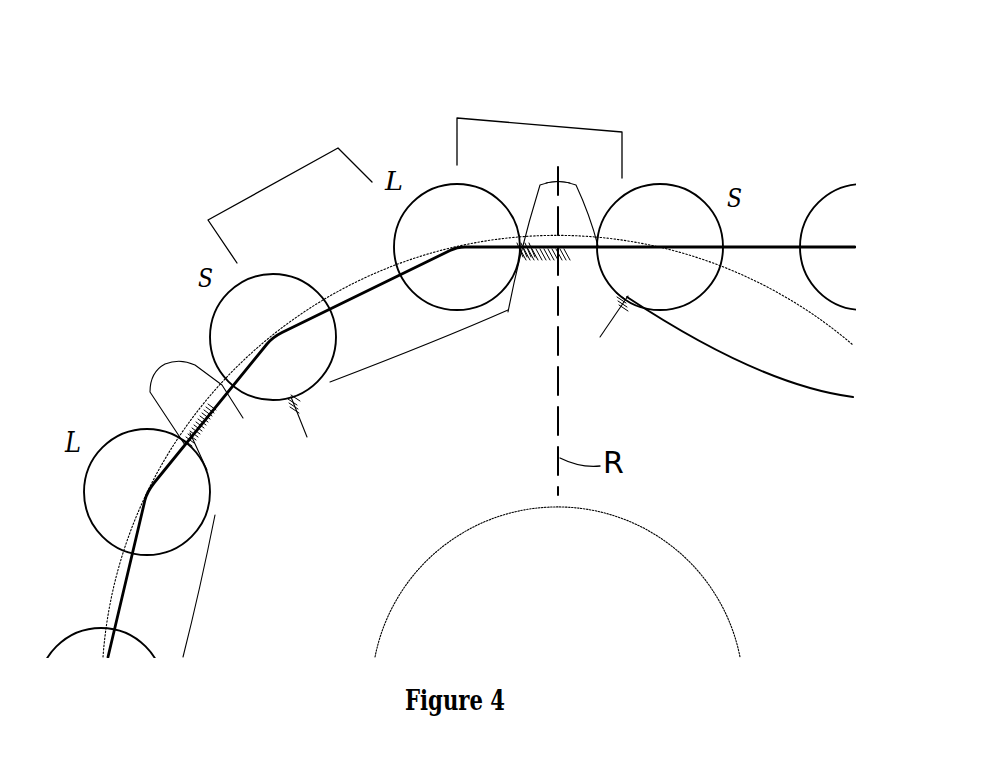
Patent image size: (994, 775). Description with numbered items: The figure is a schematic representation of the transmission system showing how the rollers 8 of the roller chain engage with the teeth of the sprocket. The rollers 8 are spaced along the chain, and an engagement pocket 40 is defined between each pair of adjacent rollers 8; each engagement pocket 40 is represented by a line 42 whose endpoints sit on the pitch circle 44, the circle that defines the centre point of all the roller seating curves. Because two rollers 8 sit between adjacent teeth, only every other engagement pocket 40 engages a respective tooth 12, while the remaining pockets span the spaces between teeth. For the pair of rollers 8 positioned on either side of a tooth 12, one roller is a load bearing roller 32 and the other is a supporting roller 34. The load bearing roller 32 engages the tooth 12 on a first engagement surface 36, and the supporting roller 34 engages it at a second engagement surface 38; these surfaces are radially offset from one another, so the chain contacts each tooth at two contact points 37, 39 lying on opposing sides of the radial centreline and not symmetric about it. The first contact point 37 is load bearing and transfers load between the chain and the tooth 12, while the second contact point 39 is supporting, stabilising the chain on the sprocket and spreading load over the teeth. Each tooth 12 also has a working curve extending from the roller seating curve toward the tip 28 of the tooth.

The roller 8 is at (420, 227).
The tooth 12 is at (553, 247).
The tip 28 is at (557, 180).
The load bearing roller 32 is at (473, 227).
The supporting roller 34 is at (678, 227).
The first engagement surface 36 is at (531, 296).
The first contact point 37 is at (361, 390).
The second engagement surface 38 is at (627, 295).
The second contact point 39 is at (740, 368).
The engagement pocket 40 is at (415, 170).
The line 42 is at (363, 292).
The pitch circle 44 is at (350, 282).